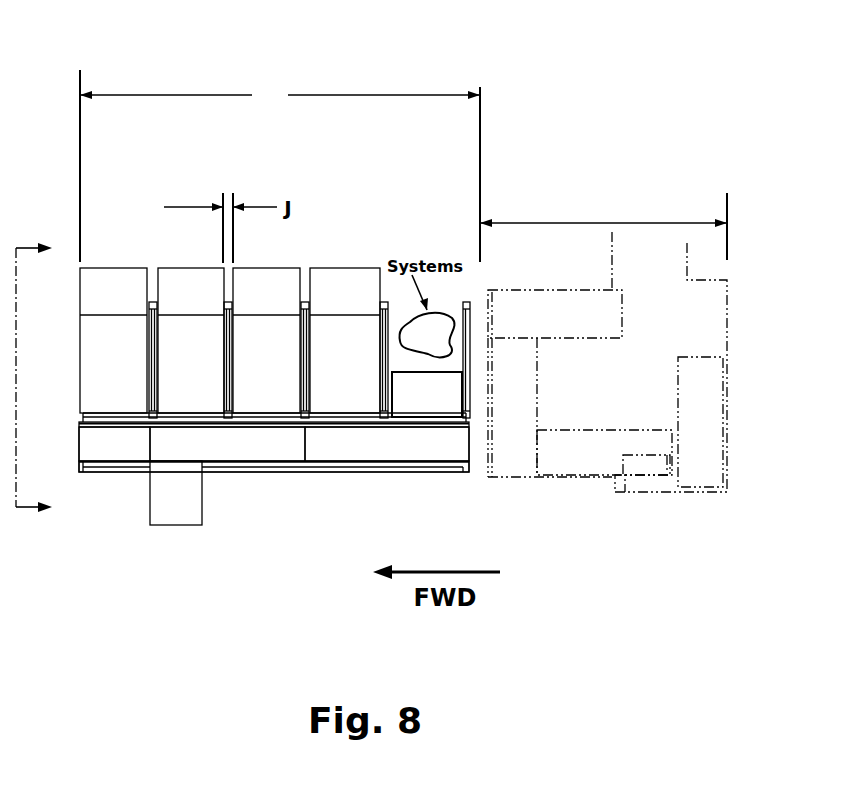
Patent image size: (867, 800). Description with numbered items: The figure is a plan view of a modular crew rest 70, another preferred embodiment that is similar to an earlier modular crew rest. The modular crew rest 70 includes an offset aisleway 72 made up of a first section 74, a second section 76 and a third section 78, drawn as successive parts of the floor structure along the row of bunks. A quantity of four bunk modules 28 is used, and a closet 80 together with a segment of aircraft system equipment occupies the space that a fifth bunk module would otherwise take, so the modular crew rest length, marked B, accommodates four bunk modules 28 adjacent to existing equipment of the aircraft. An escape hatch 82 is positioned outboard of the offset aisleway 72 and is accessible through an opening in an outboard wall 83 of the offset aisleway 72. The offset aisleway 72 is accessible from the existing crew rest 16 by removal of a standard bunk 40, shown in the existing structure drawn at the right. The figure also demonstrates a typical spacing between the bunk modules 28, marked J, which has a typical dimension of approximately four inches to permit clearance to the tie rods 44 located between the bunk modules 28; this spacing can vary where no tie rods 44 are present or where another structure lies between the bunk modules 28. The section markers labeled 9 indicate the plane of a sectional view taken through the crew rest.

The modular crew rest 70 is at (389, 72).
The existing crew rest 16 is at (558, 212).
The section line 9- 9 is at (34, 381).
The tie rods 44 is at (308, 305).
The bunk modules 28 is at (173, 393).
The first section 74 is at (97, 450).
The second section 76 is at (240, 450).
The offset aisleway 72 is at (292, 439).
The third section 78 is at (350, 452).
The closet 80 is at (420, 407).
The escape hatch 82 is at (173, 510).
The outboard wall 83 is at (442, 470).
The standard bunk 40 is at (518, 480).